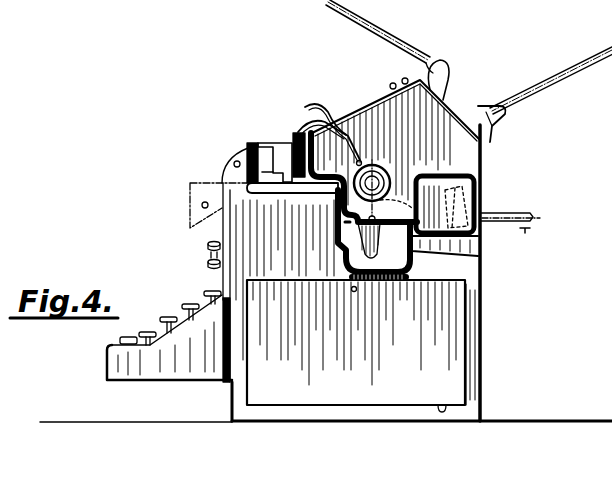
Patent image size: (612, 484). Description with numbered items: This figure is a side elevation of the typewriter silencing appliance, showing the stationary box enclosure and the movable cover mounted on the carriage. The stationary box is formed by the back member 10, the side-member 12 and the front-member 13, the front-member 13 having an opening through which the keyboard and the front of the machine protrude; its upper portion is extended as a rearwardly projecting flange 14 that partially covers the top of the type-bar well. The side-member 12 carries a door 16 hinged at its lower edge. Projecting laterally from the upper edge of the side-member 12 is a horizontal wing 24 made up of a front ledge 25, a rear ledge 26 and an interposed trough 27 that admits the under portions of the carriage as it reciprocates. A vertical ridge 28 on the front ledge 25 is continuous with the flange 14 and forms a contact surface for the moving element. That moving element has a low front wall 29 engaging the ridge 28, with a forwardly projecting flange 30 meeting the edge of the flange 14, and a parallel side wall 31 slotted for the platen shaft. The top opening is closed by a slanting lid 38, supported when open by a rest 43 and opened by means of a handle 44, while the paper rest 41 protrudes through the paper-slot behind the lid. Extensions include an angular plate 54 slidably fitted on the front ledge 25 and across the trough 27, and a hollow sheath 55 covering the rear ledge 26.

The back member 10 is at (482, 287).
The side-member 12 is at (250, 230).
The front-member 13 is at (232, 390).
The rearwardly projecting flange 14 is at (188, 200).
The door 16 is at (367, 392).
The horizontal wing 24 is at (338, 231).
The front ledge 25 is at (279, 190).
The rear ledge 26 is at (457, 255).
The trough 27 is at (390, 266).
The vertical ridge 28 is at (246, 148).
The low front wall 29 is at (262, 172).
The forwardly projecting flange 30 is at (273, 143).
The side wall 31 is at (430, 118).
The slanting lid 38 is at (357, 113).
The paper rest 41 is at (433, 73).
The rest 43 is at (496, 120).
The handle 44 is at (325, 110).
The angular plate 54 is at (381, 237).
The hollow sheath 55 is at (430, 180).